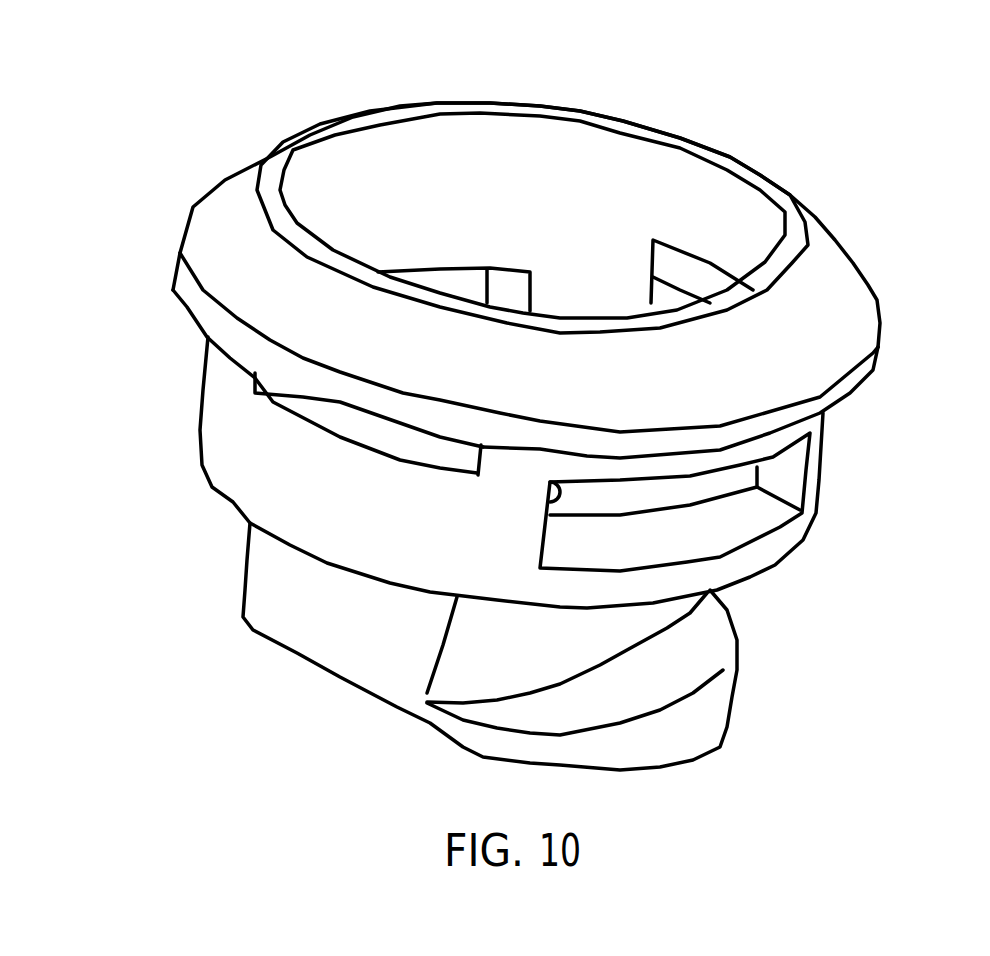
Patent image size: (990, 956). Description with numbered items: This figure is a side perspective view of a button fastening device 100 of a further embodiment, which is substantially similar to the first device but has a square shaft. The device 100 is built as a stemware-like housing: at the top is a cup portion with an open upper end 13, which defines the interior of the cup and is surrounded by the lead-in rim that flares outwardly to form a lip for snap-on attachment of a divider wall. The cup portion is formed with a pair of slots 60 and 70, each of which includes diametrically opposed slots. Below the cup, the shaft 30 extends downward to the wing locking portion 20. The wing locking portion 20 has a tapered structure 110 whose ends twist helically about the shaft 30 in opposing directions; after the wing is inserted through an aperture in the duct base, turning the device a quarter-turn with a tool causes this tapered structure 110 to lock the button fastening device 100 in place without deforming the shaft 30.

The button fastening device 100 is at (775, 145).
The open upper end 13 is at (565, 195).
The slot 70 is at (709, 281).
The slot 60 is at (466, 273).
The shaft 30 is at (471, 490).
The wing locking portion 20 is at (528, 646).
The tapered structure 110 is at (650, 664).